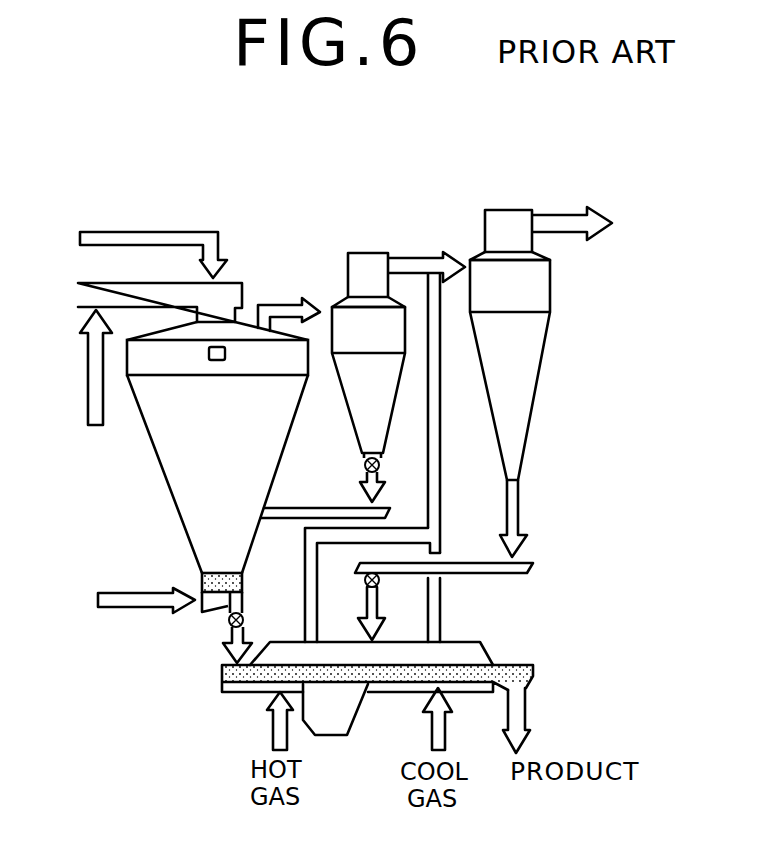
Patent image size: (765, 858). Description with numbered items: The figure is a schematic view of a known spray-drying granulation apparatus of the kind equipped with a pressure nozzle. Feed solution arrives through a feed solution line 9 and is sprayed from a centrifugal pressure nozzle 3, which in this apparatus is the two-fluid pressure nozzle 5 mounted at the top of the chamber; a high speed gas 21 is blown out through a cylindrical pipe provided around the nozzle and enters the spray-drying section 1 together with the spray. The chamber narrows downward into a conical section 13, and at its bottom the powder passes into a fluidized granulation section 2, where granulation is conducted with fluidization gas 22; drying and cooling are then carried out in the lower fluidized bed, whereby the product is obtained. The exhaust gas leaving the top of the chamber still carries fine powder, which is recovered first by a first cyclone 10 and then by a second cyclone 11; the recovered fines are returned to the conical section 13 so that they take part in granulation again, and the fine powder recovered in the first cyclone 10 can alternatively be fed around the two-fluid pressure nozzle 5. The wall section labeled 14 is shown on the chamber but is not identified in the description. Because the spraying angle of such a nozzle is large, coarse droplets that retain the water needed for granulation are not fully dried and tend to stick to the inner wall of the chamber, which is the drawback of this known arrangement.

The spray-drying section 1 is at (172, 470).
The fluidized granulation section 2 is at (202, 580).
The centrifugal pressure nozzle 3 is at (246, 281).
The two-fluid pressure nozzle 5 is at (213, 347).
The feed solution line 9 is at (176, 215).
The first cyclone 10 is at (383, 417).
The second cyclone 11 is at (523, 420).
The conical section 13 is at (172, 510).
The cylindrical vessel section 14 is at (130, 357).
The high speed gas 21 is at (88, 408).
The fluidization gas 22 is at (100, 600).